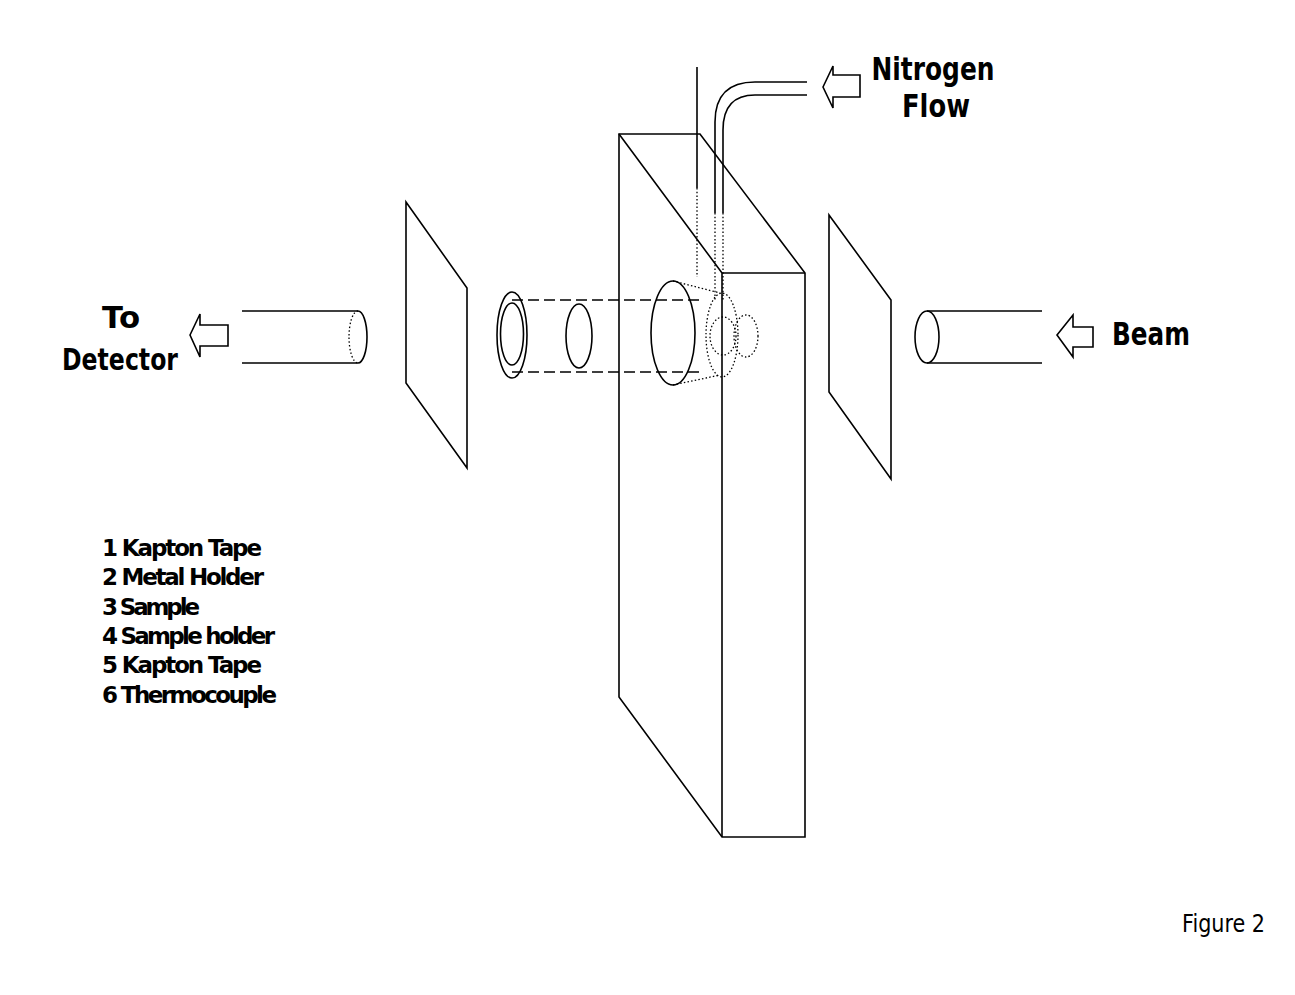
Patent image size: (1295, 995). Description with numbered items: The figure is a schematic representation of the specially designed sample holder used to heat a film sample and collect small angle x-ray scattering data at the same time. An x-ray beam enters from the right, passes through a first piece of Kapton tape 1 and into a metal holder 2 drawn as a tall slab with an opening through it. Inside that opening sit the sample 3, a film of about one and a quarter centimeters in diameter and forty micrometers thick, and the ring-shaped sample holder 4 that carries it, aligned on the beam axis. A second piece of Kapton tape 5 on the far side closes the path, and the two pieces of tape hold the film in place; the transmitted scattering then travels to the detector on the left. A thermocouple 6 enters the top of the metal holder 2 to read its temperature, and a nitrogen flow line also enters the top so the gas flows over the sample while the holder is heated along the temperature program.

The Kapton tape 1 is at (860, 347).
The metal holder 2 is at (712, 485).
The sample 3 is at (579, 361).
The sample holder 4 is at (598, 353).
The Kapton tape 5 is at (436, 335).
The thermocouple 6 is at (682, 169).